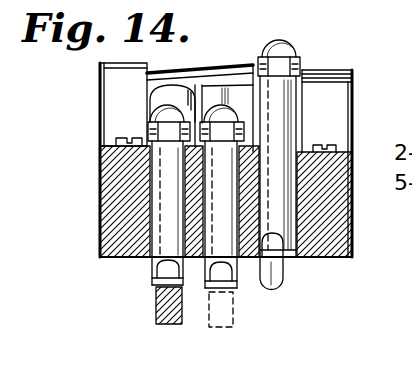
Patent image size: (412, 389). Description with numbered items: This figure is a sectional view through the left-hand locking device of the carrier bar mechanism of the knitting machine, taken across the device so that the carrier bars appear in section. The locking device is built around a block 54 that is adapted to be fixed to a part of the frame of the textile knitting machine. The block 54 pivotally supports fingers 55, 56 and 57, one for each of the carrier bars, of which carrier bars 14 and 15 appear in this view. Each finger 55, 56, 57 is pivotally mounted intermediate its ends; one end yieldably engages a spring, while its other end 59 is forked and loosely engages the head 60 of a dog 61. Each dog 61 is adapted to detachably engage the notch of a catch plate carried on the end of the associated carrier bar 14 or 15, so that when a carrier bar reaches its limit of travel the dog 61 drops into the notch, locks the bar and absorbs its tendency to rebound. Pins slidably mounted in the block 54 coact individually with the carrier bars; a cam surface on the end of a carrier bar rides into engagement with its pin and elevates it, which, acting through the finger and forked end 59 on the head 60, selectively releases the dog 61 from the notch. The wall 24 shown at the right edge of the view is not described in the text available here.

The carrier bar 14 is at (221, 330).
The carrier bar 15 is at (170, 326).
The housing wall 24 is at (353, 118).
The block 54 is at (97, 208).
The finger 55 is at (172, 82).
The finger 56 is at (226, 83).
The finger 57 is at (304, 89).
The forked end 59 is at (148, 131).
The head 60 is at (160, 113).
The dog 61 is at (155, 261).